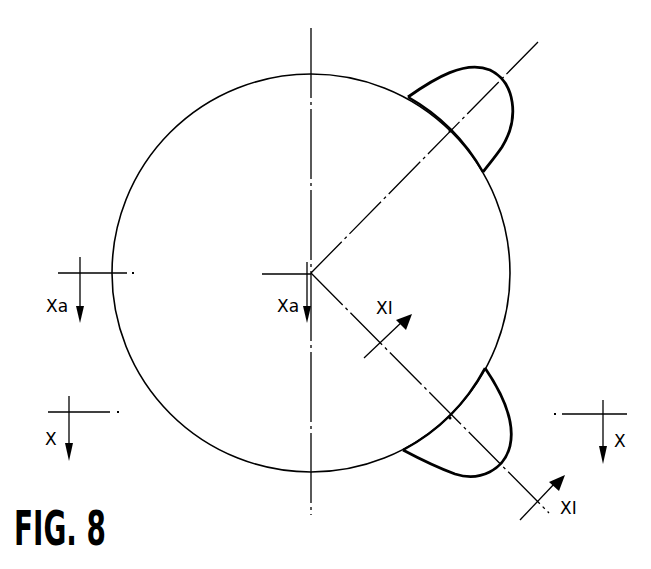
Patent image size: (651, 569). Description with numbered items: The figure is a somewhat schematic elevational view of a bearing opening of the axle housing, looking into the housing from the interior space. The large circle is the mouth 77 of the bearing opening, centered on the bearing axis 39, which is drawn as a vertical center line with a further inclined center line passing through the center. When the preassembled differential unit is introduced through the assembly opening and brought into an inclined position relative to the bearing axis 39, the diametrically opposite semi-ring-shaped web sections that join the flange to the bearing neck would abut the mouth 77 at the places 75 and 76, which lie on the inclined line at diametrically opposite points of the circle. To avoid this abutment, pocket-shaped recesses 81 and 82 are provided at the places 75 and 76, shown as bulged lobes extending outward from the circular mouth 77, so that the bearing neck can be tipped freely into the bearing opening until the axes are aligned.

The bearing axis 39 is at (308, 484).
The mouth of the bearing opening 77 is at (150, 155).
The place of abutment 75 is at (450, 130).
The place of abutment 76 is at (450, 418).
The pocket-shaped recess 81 is at (492, 134).
The pocket-shaped recess 82 is at (433, 450).